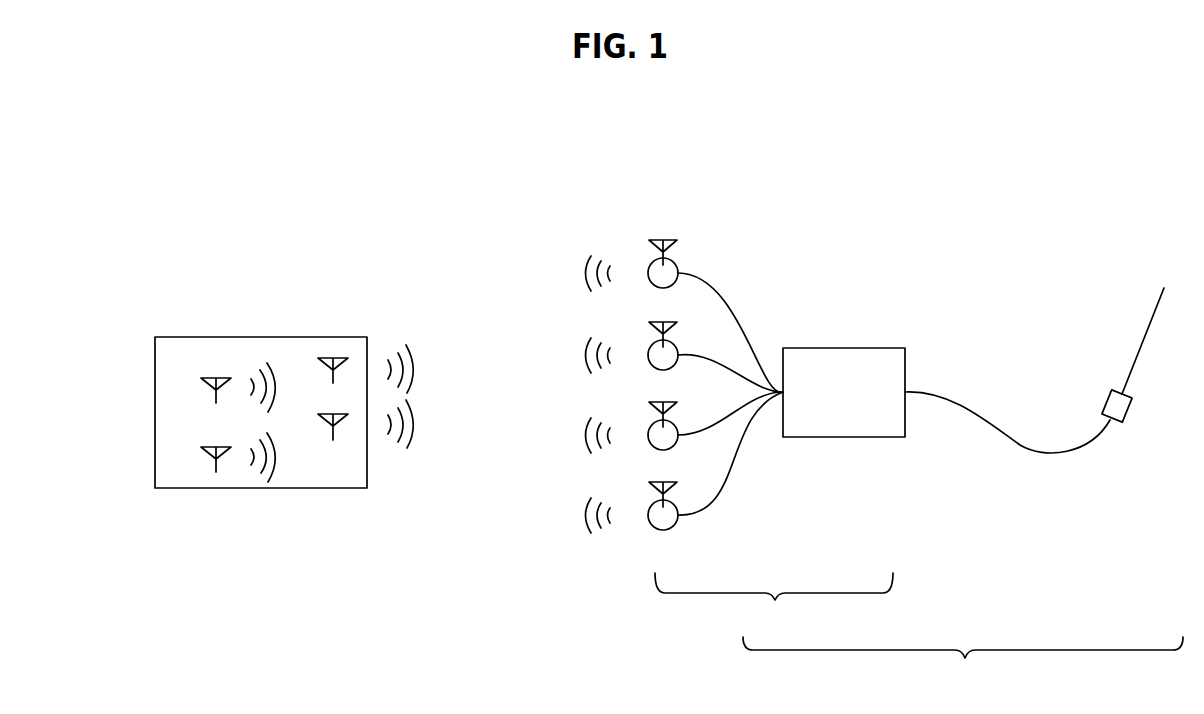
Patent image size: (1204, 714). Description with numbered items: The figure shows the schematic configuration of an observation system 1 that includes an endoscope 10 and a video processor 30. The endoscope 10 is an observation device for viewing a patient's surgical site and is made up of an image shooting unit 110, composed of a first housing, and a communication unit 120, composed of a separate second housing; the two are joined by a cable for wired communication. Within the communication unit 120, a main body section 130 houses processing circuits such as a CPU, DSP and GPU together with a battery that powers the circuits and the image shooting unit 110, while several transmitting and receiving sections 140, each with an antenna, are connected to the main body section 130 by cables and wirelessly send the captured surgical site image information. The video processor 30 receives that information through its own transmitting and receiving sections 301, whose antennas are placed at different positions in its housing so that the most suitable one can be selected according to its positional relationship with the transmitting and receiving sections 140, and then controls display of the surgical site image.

The observation system 1 is at (241, 205).
The endoscope 10 is at (963, 663).
The video processor 30 is at (293, 337).
The transmitting and receiving sections 301 is at (209, 377).
The image shooting unit 110 is at (1125, 424).
The communication unit 120 is at (774, 604).
The main body section 130 is at (848, 437).
The transmitting and receiving sections 140 is at (674, 527).